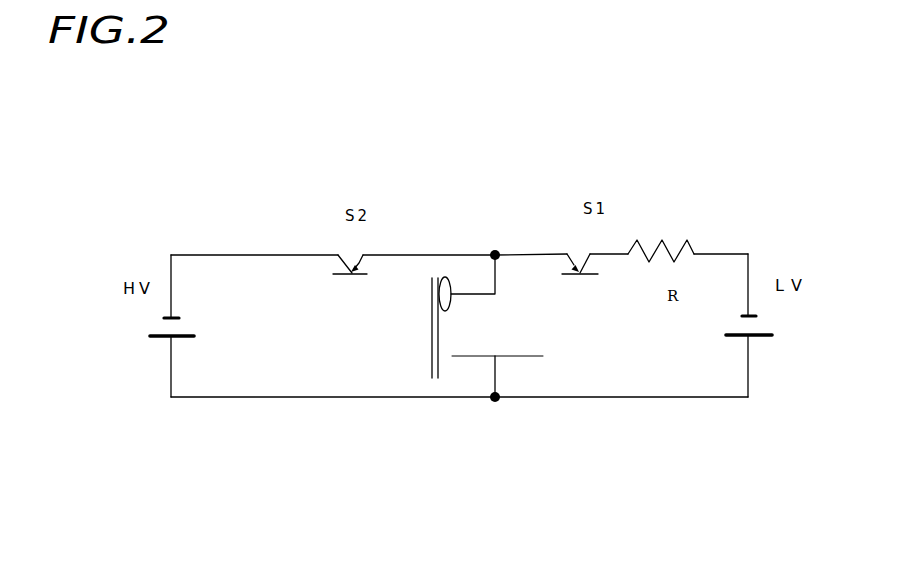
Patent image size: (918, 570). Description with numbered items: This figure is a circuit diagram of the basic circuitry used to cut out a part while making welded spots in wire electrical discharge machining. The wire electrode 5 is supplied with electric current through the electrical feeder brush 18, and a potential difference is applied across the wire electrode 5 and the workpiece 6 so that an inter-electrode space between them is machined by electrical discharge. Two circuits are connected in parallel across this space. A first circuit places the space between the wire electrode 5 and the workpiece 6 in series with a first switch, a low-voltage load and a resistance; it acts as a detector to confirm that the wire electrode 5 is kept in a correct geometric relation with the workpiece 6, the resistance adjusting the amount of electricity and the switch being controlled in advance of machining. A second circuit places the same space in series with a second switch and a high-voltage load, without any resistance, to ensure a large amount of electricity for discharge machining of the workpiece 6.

The wire electrode 5 is at (430, 324).
The electrical feeder brush 18 is at (450, 284).
The workpiece 6 is at (532, 358).